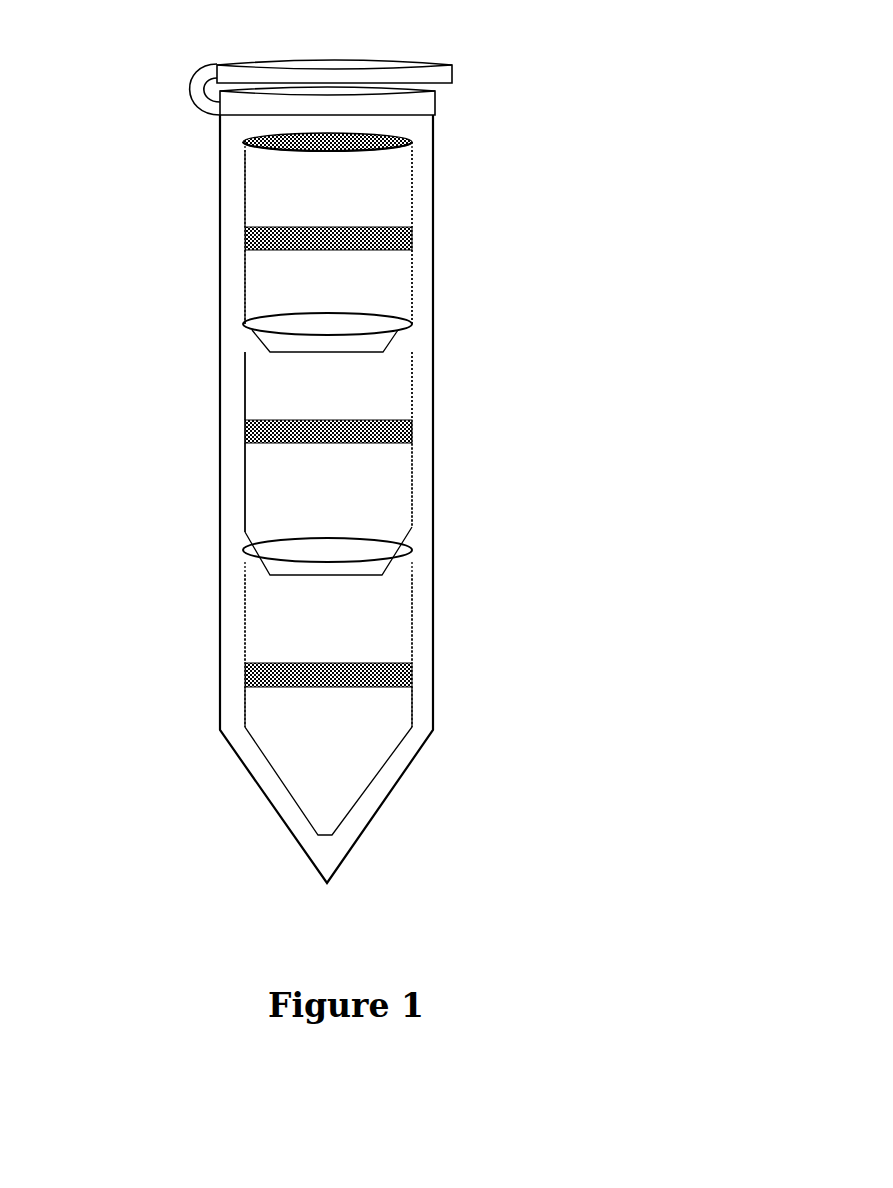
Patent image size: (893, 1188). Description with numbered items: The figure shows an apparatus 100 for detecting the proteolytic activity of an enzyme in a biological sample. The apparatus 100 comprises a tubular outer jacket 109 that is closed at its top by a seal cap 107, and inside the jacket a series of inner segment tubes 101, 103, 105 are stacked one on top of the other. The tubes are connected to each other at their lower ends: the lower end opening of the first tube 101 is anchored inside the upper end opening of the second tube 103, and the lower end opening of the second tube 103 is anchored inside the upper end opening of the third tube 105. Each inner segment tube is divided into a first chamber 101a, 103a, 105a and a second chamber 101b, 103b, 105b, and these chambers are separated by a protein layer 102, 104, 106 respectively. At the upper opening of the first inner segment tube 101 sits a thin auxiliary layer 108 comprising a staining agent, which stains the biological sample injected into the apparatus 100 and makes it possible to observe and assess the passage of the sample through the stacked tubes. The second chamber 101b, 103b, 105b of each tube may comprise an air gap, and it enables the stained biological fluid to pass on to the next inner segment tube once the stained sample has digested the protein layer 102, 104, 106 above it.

The apparatus 100 is at (134, 58).
The first inner segment tube 101 is at (413, 205).
The first chamber of first inner segment tube 101a is at (388, 178).
The second chamber of first inner segment tube 101b is at (385, 278).
The protein layer 102 is at (245, 242).
The second inner segment tube 103 is at (413, 350).
The first chamber of second inner segment tube 103a is at (368, 402).
The second chamber of second inner segment tube 103b is at (372, 472).
The protein layer 104 is at (245, 433).
The third inner segment tube 105 is at (413, 568).
The first chamber of third inner segment tube 105a is at (377, 637).
The second chamber of third inner segment tube 105b is at (370, 720).
The protein layer 106 is at (245, 675).
The seal cap 107 is at (452, 65).
The thin auxiliary layer 108 is at (413, 140).
The tubular outer jacket 109 is at (219, 162).